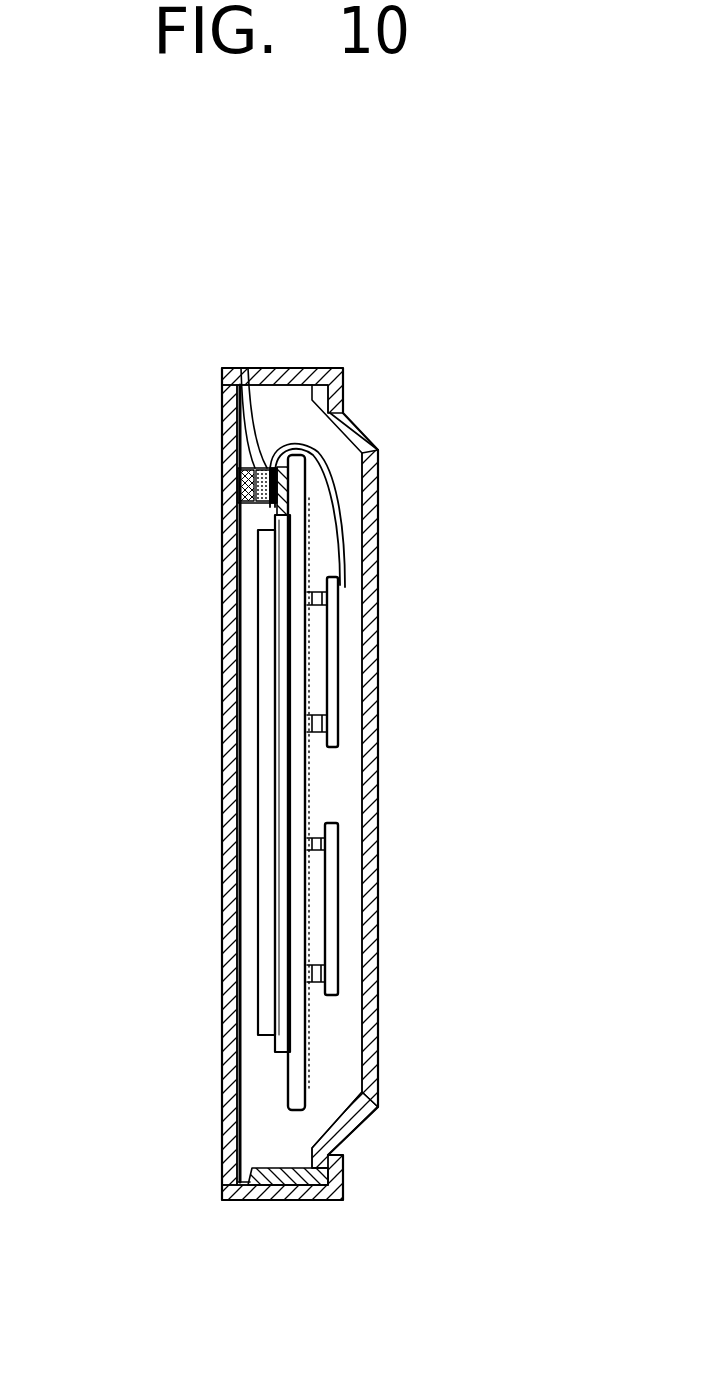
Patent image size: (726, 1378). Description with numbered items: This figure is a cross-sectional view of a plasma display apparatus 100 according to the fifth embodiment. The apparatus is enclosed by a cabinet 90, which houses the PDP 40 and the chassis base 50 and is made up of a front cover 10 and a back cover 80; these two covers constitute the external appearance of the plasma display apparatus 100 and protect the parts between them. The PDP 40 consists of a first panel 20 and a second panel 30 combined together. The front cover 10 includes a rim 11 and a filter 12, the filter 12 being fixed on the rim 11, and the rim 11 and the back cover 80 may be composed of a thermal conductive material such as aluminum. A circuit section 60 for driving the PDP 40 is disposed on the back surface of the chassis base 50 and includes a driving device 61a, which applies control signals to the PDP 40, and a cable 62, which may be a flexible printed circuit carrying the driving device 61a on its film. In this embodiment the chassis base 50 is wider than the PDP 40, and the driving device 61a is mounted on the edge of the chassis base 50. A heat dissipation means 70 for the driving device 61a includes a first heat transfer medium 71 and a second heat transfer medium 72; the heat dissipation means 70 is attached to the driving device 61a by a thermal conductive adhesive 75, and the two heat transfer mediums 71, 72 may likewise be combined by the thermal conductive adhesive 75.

The plasma display apparatus 100 is at (185, 1137).
The cabinet 90 is at (308, 357).
The front cover 10 is at (118, 1003).
The rim 11 is at (237, 1078).
The filter 12 is at (233, 1017).
The back cover 80 is at (275, 1176).
The thermal conductive adhesive 75 is at (238, 369).
The heat dissipation means 70 is at (125, 462).
The second heat transfer medium 72 is at (243, 474).
The first heat transfer medium 71 is at (258, 495).
The driving device 61a is at (285, 483).
The cable 62 is at (344, 527).
The chassis base 50 is at (297, 940).
The plasma display panel 40 is at (118, 800).
The first panel 20 is at (258, 812).
The second panel 30 is at (278, 879).
The circuit section 60 is at (338, 708).